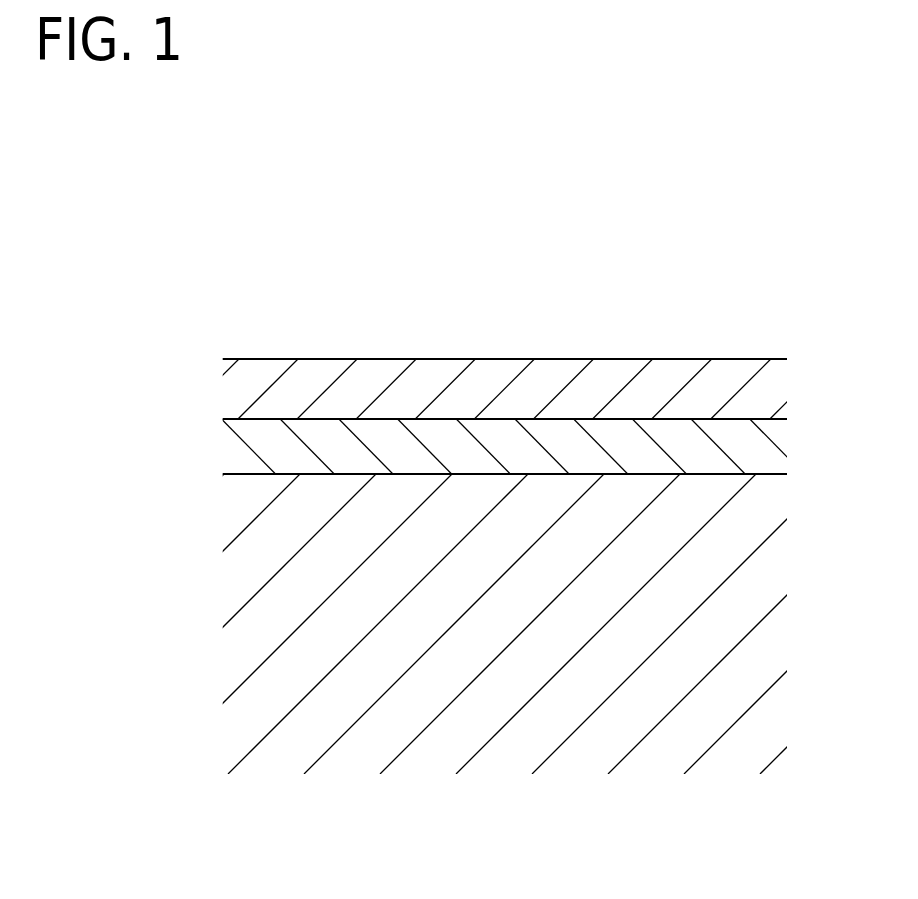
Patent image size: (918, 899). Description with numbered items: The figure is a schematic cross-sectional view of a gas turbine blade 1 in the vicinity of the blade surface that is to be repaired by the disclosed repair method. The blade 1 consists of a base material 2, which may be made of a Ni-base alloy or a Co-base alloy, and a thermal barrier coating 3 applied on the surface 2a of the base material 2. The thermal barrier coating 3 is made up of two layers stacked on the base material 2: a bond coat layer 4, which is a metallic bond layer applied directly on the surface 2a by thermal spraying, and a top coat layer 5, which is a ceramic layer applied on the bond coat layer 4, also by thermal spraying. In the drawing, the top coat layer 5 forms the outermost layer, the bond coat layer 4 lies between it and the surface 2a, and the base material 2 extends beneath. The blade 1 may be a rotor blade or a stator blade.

The gas turbine blade 1 is at (227, 222).
The base material 2 is at (467, 503).
The surface of the base material 2a is at (363, 474).
The thermal barrier coating 3 is at (688, 267).
The bond coat layer 4 is at (678, 440).
The top coat layer 5 is at (607, 390).